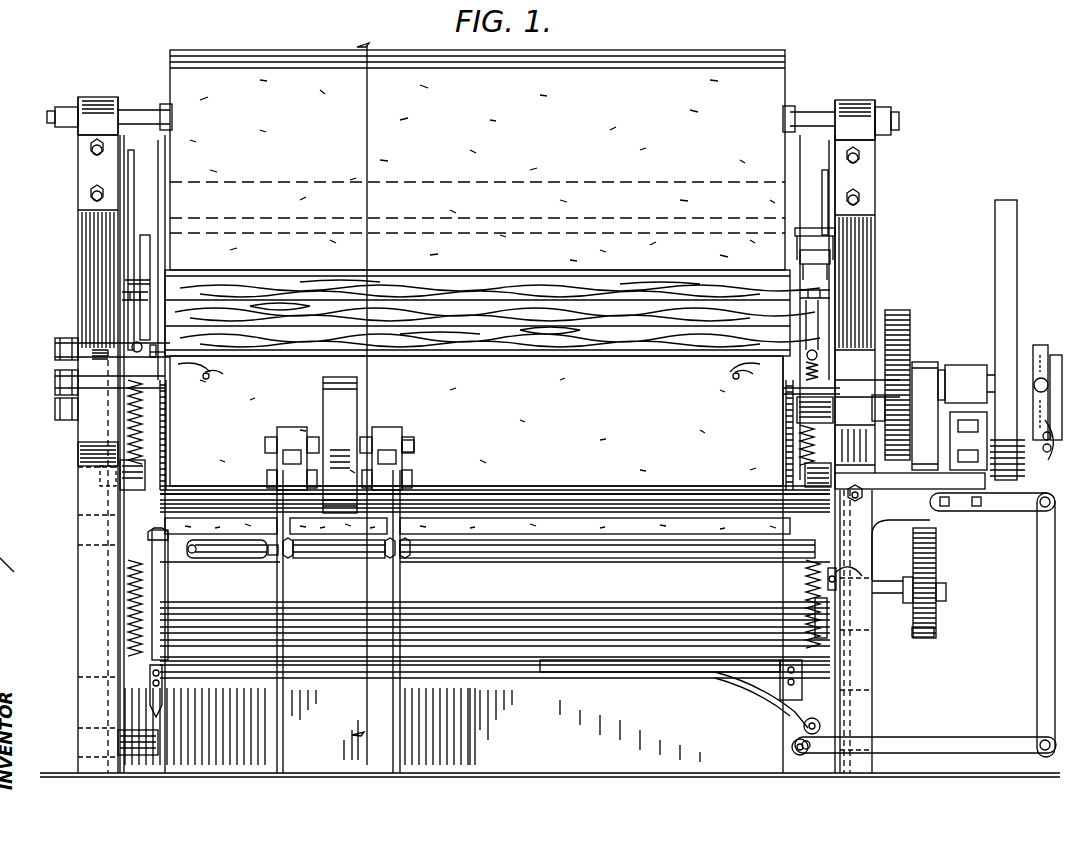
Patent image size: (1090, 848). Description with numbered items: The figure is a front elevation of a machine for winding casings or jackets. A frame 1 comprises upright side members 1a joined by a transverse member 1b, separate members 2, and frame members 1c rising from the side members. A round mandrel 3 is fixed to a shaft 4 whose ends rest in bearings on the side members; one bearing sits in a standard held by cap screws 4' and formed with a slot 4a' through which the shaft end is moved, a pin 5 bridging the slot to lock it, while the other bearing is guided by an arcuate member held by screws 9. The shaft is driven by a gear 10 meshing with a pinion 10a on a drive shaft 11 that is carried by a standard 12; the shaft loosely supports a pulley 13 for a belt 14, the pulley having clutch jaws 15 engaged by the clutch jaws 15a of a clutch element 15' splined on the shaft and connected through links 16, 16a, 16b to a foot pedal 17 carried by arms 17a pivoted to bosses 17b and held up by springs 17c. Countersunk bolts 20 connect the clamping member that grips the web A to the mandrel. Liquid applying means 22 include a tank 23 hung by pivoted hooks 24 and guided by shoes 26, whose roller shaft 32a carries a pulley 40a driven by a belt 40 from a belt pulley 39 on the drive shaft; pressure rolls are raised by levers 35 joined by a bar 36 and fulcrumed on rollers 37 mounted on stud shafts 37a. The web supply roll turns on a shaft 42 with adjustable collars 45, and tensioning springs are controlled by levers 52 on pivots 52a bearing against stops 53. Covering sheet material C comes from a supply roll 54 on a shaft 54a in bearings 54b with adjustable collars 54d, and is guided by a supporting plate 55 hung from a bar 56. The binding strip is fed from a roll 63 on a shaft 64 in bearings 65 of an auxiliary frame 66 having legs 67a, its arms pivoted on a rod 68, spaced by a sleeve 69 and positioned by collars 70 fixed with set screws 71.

The frame 1 is at (78, 556).
The upright side members 1a is at (80, 482).
The transverse member 1b is at (576, 668).
The frame members 1c is at (80, 245).
The separate members 2 is at (418, 644).
The mandrel 3 is at (600, 300).
The shaft 4 is at (568, 393).
The cap screws 4' is at (60, 417).
The slot 4a' is at (420, 373).
The pin 5 is at (98, 350).
The screws 9 is at (508, 366).
The gear 10 is at (924, 308).
The pinion 10a is at (918, 366).
The drive shaft 11 is at (1043, 446).
The standard 12 is at (986, 468).
The pulley 13 is at (980, 348).
The belt 14 is at (995, 266).
The clutch jaws 15 is at (1041, 380).
The clutch element 15' is at (1049, 398).
The clutch jaws 15a is at (1024, 428).
The link 16 is at (1038, 584).
The link 16a is at (908, 732).
The link 16b is at (758, 706).
The foot pedal 17 is at (698, 664).
The arms 17a is at (196, 670).
The bosses 17b is at (118, 738).
The springs 17c is at (150, 606).
The countersunk bolts 20 is at (212, 370).
The liquid applying means 22 is at (495, 602).
The tank 23 is at (516, 668).
The pivoted hooks 24 is at (212, 556).
The shoes 26 is at (866, 580).
The shaft 32a is at (946, 590).
The levers 35 is at (80, 452).
The bar 36 is at (572, 490).
The rollers 37 is at (146, 486).
The stud shafts 37a is at (110, 486).
The belt pulley 39 is at (950, 368).
The belt 40 is at (920, 536).
The pulley 40a is at (935, 628).
The shaft 42 is at (56, 348).
The adjustable collars 45 is at (92, 352).
The levers 52 is at (134, 190).
The pivots 52a is at (148, 238).
The stops 53 is at (130, 284).
The supply roll 54 is at (780, 64).
The shaft 54a is at (808, 112).
The bearings 54b is at (108, 99).
The adjustable collars 54d is at (78, 104).
The supporting plate 55 is at (832, 254).
The bar 56 is at (805, 230).
The roll 63 is at (345, 420).
The shaft 64 is at (414, 446).
The bearings 65 is at (288, 418).
The auxiliary frame 66 is at (392, 428).
The legs 67a is at (286, 646).
The rod 68 is at (516, 558).
The sleeve 69 is at (338, 562).
The collars 70 is at (262, 550).
The set screws 71 is at (272, 556).
The web A is at (618, 356).
The covering sheet material C is at (170, 148).